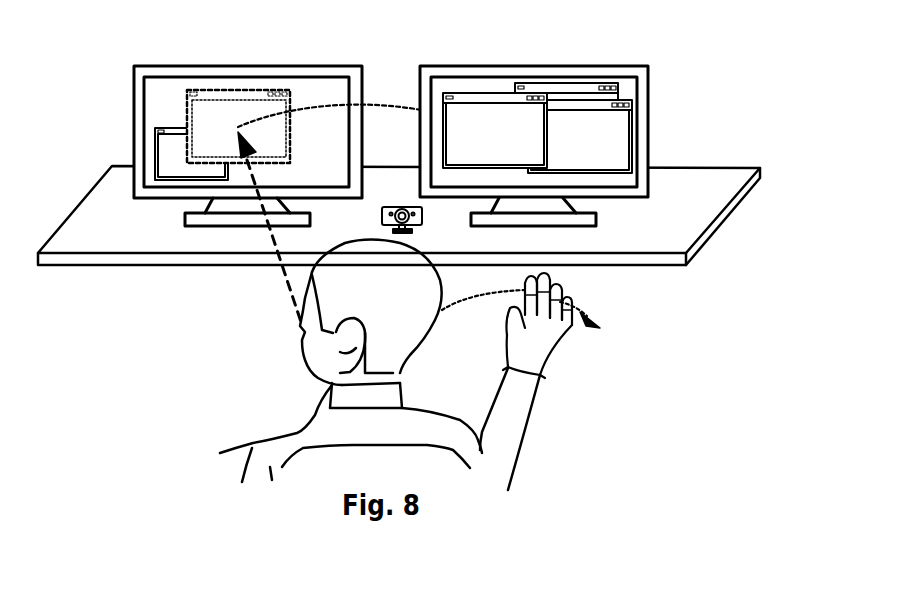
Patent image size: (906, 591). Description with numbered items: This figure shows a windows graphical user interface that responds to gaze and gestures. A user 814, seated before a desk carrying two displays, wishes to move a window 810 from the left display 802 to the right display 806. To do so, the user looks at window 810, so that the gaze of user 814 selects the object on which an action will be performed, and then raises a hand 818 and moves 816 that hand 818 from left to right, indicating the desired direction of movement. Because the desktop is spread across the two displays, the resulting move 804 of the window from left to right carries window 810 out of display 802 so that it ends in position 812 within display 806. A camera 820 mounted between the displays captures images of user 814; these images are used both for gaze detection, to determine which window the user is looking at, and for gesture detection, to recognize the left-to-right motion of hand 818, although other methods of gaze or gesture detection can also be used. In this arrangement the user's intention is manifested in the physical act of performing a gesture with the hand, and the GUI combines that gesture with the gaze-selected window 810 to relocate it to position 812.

The display 802 is at (165, 85).
The move 804 is at (400, 108).
The display 806 is at (448, 85).
The window 810 is at (280, 134).
The position 812 is at (533, 146).
The user 814 is at (267, 450).
The moves 816 is at (473, 298).
The hand 818 is at (545, 353).
The camera 820 is at (390, 218).